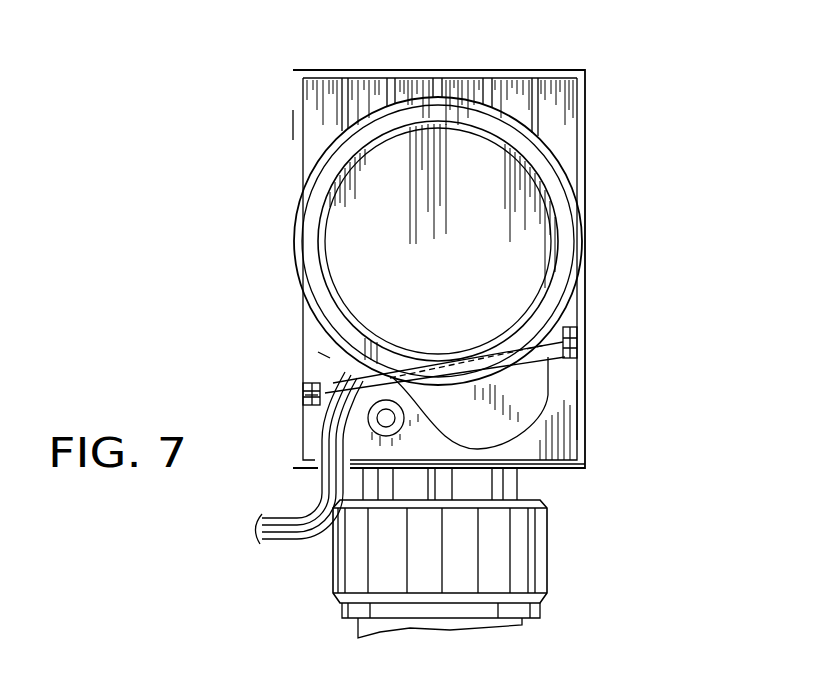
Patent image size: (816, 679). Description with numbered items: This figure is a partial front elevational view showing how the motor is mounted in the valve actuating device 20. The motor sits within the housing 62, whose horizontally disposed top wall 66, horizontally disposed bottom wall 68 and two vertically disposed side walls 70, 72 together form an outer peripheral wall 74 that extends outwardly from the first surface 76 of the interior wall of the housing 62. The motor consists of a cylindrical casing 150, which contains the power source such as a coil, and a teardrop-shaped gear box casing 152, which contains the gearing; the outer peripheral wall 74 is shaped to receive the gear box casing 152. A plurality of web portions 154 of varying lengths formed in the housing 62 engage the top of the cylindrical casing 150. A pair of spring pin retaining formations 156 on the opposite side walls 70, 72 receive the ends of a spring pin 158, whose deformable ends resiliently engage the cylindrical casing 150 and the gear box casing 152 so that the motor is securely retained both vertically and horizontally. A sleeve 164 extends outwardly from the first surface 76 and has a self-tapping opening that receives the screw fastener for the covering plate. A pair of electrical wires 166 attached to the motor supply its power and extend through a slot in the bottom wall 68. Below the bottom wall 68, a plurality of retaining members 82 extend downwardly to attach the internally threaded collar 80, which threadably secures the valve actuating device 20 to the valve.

The valve actuating device 20 is at (601, 237).
The housing 62 is at (601, 84).
The top wall 66 is at (470, 75).
The bottom wall 68 is at (567, 470).
The side wall 70 is at (578, 357).
The side wall 72 is at (298, 124).
The outer peripheral wall 74 is at (601, 407).
The first surface 76 is at (325, 360).
The collar 80 is at (517, 558).
The retaining members 82 is at (507, 483).
The cylindrical casing 150 is at (553, 178).
The gear box casing 152 is at (520, 417).
The web portions 154 is at (440, 88).
The spring pin retaining formations 156 is at (310, 400).
The spring pin 158 is at (322, 384).
The sleeve 164 is at (393, 433).
The electrical wires 166 is at (288, 512).